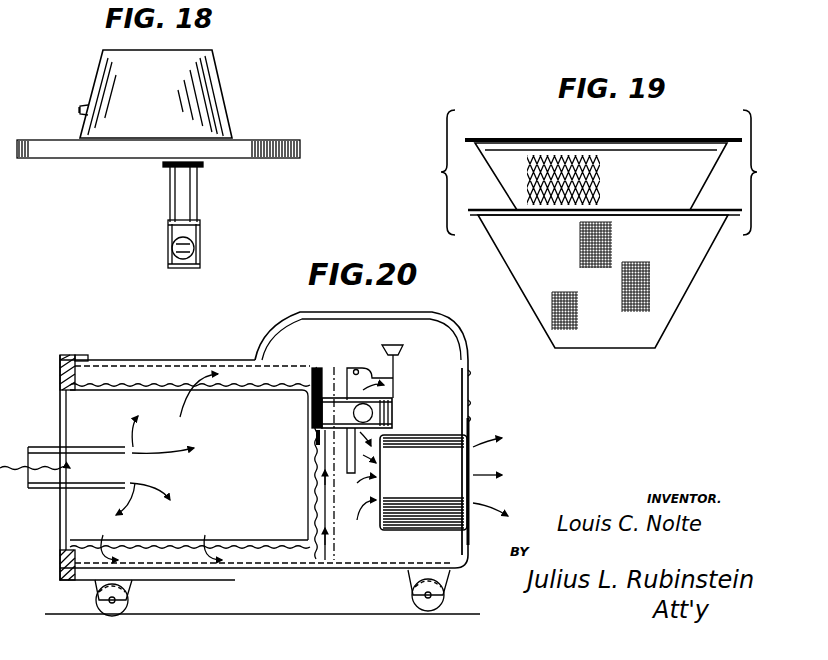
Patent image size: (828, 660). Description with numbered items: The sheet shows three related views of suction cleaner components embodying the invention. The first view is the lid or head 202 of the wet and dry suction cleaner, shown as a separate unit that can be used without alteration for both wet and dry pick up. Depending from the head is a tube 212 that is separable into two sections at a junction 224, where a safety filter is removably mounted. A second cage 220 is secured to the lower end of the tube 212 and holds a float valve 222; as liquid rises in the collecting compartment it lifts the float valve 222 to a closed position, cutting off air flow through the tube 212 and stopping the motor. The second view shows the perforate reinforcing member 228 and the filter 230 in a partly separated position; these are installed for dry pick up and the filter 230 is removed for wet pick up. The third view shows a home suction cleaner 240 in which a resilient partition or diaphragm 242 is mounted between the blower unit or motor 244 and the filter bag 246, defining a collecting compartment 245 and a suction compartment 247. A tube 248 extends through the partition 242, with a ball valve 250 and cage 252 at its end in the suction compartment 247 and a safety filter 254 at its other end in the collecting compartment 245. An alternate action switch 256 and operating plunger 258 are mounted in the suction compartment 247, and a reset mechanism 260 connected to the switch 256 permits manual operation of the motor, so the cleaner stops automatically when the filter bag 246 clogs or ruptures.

In FIG. 18, the lid or head 202 is at (265, 138).
In FIG. 18, the tube 212 is at (198, 188).
In FIG. 18, the second cage 220 is at (202, 230).
In FIG. 18, the float valve 222 is at (183, 248).
In FIG. 18, the junction 224 is at (165, 165).
In FIG. 19, the perforate reinforcing member 228 is at (503, 187).
In FIG. 19, the filter 230 is at (697, 274).
In FIG. 20, the suction cleaner 240 is at (111, 332).
In FIG. 20, the resilient partition or diaphragm 242 is at (337, 525).
In FIG. 20, the blower unit or motor 244 is at (437, 478).
In FIG. 20, the collecting compartment 245 is at (113, 405).
In FIG. 20, the filter bag 246 is at (166, 542).
In FIG. 20, the suction compartment 247 is at (437, 390).
In FIG. 20, the tube 248 is at (318, 418).
In FIG. 20, the ball valve 250 is at (393, 406).
In FIG. 20, the cage 252 is at (393, 419).
In FIG. 20, the safety filter 254 is at (321, 438).
In FIG. 20, the alternate action switch 256 is at (347, 457).
In FIG. 20, the operating plunger 258 is at (320, 465).
In FIG. 20, the reset mechanism 260 is at (380, 347).